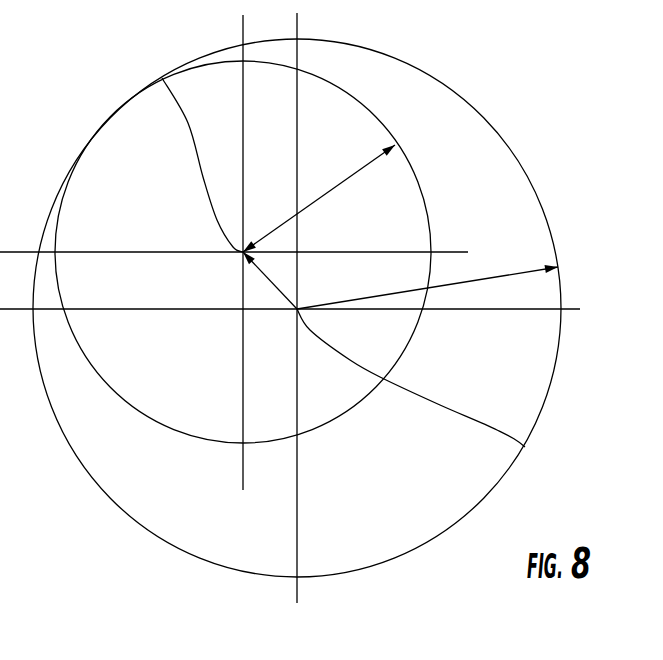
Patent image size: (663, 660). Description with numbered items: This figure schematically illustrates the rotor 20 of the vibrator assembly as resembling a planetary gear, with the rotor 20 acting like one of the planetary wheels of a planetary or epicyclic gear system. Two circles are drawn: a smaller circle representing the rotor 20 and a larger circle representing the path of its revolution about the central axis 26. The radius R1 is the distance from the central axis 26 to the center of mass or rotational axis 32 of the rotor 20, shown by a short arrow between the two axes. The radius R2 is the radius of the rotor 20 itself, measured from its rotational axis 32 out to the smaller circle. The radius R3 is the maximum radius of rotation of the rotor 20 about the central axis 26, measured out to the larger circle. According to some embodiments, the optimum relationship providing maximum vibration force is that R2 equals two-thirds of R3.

The rotor 20 is at (115, 397).
The central axis 26 is at (525, 447).
The rotational axis 32 is at (162, 78).
The radius from central axis to rotor rotational axis R1 is at (270, 280).
The radius of the rotor R2 is at (319, 198).
The maximum radius of rotation of the rotor R3 is at (427, 279).